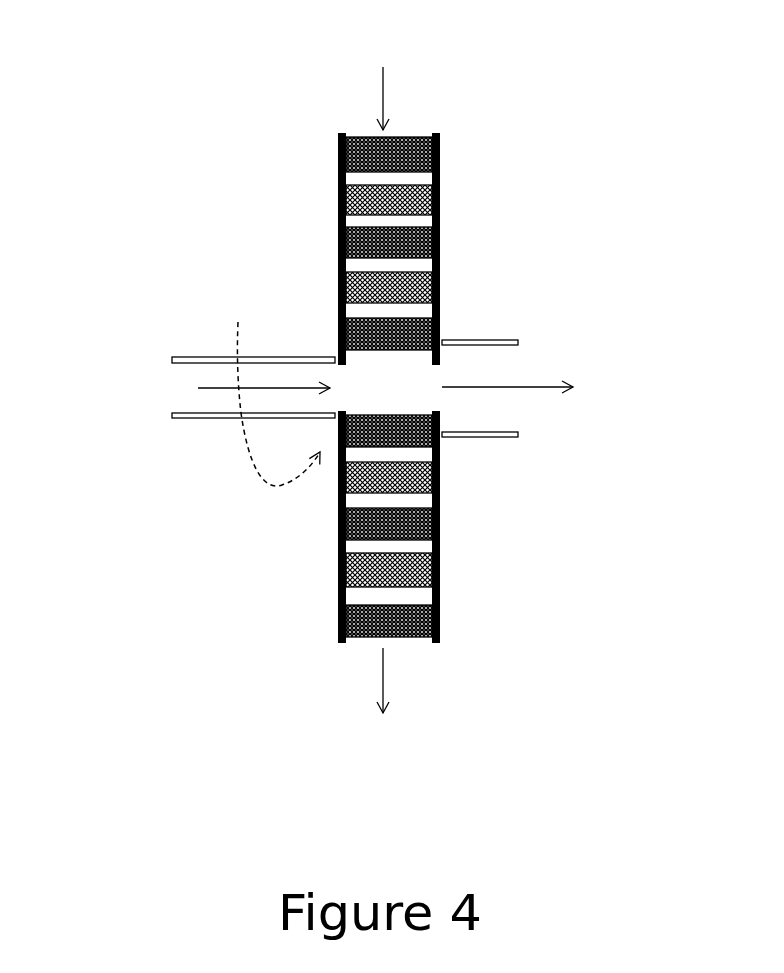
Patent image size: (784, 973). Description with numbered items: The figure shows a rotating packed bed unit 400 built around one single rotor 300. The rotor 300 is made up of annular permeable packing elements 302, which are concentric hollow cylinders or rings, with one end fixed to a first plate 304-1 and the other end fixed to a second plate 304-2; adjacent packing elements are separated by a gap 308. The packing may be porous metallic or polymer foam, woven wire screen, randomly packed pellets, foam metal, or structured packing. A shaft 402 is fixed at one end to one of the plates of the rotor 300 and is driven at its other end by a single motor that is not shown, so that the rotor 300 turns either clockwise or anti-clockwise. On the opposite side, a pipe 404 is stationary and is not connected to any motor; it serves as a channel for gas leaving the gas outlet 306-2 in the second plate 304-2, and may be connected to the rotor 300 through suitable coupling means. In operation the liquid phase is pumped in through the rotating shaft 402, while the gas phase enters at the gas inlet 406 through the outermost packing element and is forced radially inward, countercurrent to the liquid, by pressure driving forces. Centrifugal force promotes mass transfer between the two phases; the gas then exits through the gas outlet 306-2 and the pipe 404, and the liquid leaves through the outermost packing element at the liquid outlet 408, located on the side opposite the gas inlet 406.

The rotating packed bed unit 400 is at (490, 98).
The single rotor 300 is at (332, 318).
The annular permeable packing elements 302 is at (362, 247).
The first plate 304-1 is at (338, 257).
The second plate 304-2 is at (438, 293).
The gas outlet 306-2 is at (765, 398).
The gap 308 is at (377, 595).
The shaft 402 is at (237, 414).
The pipe 404 is at (481, 437).
The gas inlet 406 is at (455, 56).
The liquid outlet 408 is at (402, 778).